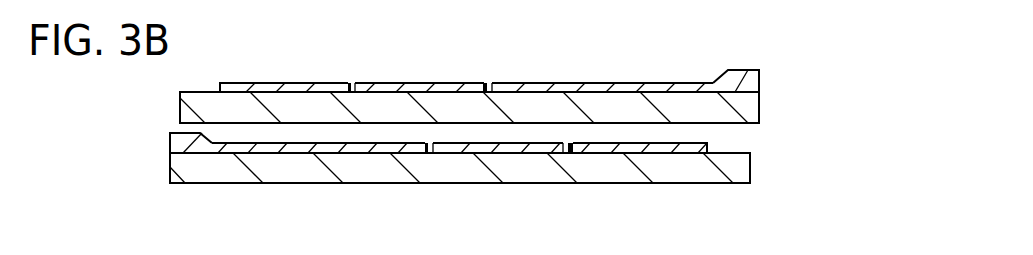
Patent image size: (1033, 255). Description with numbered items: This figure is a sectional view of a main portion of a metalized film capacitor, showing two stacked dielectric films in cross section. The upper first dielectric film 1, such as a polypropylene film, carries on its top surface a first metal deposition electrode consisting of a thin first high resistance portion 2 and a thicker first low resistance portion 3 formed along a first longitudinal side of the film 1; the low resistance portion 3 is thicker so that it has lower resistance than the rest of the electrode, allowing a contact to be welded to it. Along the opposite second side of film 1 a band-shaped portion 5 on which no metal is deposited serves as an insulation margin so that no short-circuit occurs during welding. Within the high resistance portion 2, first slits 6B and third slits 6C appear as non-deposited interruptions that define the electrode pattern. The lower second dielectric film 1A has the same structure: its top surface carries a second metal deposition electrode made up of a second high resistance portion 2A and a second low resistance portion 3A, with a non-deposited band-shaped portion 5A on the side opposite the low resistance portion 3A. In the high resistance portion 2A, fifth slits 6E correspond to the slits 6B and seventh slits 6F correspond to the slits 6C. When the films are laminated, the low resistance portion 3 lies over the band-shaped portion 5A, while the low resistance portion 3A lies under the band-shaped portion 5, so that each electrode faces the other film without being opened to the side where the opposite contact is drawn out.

The first dielectric film 1 is at (750, 110).
The second dielectric film 1A is at (743, 163).
The first high resistance portion 2 is at (479, 84).
The second high resistance portion 2A is at (473, 150).
The first low resistance portion 3 is at (745, 72).
The second low resistance portion 3A is at (177, 141).
The band-shaped portion 5 is at (197, 93).
The band-shaped portion 5A is at (727, 152).
The first slits 6B is at (490, 83).
The third slits 6C is at (347, 86).
The fifth slits 6E is at (427, 147).
The seventh slits 6F is at (562, 147).